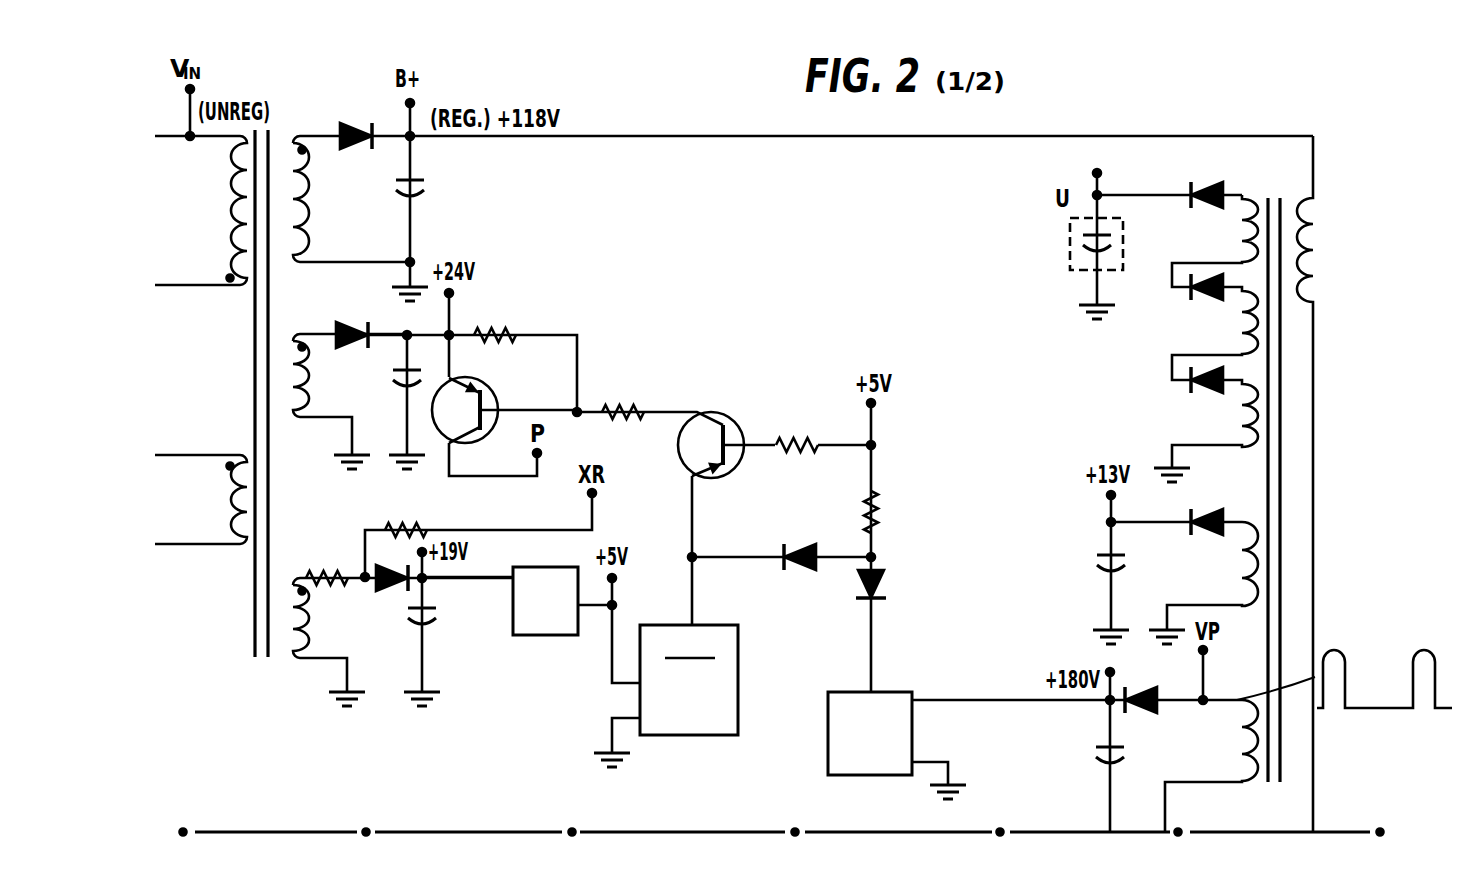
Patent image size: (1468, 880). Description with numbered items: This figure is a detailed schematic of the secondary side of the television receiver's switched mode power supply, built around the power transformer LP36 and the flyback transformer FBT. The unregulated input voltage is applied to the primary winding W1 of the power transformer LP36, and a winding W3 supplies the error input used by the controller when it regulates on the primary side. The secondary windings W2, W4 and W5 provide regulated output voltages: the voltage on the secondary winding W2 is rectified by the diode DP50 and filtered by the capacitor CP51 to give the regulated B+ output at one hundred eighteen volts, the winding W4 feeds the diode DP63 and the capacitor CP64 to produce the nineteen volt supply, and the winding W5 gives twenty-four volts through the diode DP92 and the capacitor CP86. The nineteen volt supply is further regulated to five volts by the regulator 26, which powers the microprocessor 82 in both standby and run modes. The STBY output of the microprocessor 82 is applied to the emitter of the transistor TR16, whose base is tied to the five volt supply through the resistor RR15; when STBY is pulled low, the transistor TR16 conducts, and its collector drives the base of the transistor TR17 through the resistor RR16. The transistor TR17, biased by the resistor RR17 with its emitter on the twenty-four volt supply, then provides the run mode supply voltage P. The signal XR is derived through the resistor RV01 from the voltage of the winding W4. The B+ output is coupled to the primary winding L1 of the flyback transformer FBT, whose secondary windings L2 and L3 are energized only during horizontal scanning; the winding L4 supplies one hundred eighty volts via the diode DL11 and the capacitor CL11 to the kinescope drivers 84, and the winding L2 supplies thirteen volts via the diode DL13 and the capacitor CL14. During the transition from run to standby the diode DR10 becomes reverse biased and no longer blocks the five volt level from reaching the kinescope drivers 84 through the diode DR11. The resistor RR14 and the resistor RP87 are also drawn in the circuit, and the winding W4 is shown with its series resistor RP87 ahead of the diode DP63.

The regulator 26 is at (557, 636).
The microprocessor 82 is at (738, 665).
The kinescope drivers 84 is at (828, 725).
The primary winding W1 is at (201, 210).
The secondary winding W2 is at (351, 199).
The winding W3 is at (201, 499).
The secondary winding W4 is at (335, 642).
The secondary winding W5 is at (287, 380).
The power transformer LP36 is at (255, 411).
The diode DP50 is at (356, 119).
The capacitor CP51 is at (441, 218).
The diode DP92 is at (352, 320).
The capacitor CP86 is at (370, 402).
The resistor RR17 is at (510, 330).
The transistor TR17 is at (504, 401).
The resistor RR16 is at (624, 383).
The transistor TR16 is at (729, 450).
The resistor RR15 is at (800, 413).
The resistor RR14 is at (904, 511).
The diode DR10 is at (781, 540).
The diode DR11 is at (893, 631).
The resistor RV01 is at (422, 528).
The resistor RP87 is at (319, 547).
The diode DP63 is at (375, 594).
The capacitor CP64 is at (452, 629).
The secondary winding L3 is at (1160, 347).
The flyback transformer FBT is at (1270, 471).
The primary winding L1 is at (1317, 484).
The diode DL13 is at (1176, 539).
The secondary winding L2 is at (1237, 588).
The capacitor CL14 is at (1087, 599).
The diode DL11 is at (1176, 712).
The winding L4 is at (1233, 747).
The capacitor CL11 is at (1082, 754).